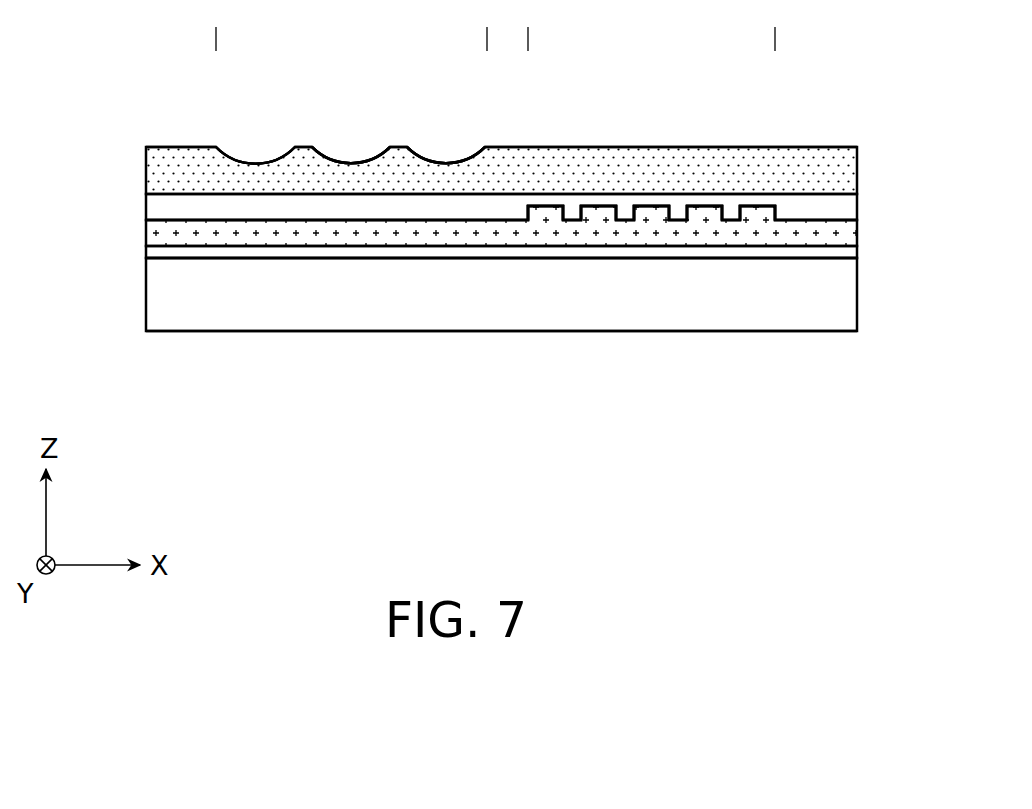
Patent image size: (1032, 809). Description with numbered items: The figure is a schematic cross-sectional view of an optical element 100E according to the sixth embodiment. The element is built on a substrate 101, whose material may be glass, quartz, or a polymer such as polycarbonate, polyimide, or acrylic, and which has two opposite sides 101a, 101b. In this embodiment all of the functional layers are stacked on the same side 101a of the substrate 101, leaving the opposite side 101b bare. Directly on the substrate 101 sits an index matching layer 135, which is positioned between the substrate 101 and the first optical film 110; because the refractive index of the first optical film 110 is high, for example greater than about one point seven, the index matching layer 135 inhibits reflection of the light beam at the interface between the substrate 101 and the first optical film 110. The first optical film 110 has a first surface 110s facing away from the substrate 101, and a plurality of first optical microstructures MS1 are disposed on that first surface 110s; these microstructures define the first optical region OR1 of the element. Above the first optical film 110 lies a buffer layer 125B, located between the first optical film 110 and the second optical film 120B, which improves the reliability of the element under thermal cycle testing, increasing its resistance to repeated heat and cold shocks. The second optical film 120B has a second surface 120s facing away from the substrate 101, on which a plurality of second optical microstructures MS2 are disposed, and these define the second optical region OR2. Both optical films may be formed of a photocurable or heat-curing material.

The optical element 100E is at (903, 515).
The substrate 101 is at (840, 310).
The side of substrate 101a is at (180, 256).
The side of substrate 101b is at (177, 334).
The index matching layer 135 is at (840, 253).
The first optical film 110 is at (840, 233).
The first surface 110s is at (178, 217).
The first optical microstructures MS1 is at (698, 209).
The buffer layer 125B is at (840, 202).
The second optical film 120B is at (840, 163).
The second surface 120s is at (173, 146).
The second optical microstructures MS2 is at (445, 163).
The first optical region OR1 is at (773, 39).
The second optical region OR2 is at (485, 39).